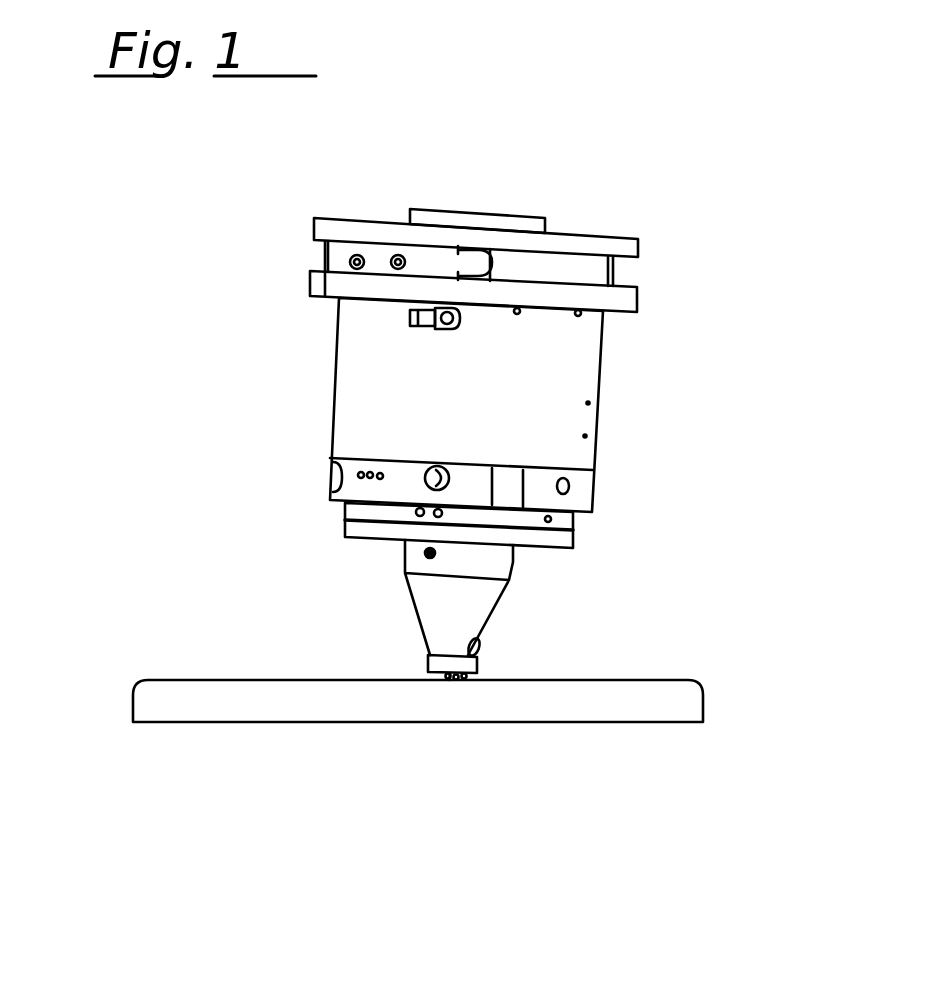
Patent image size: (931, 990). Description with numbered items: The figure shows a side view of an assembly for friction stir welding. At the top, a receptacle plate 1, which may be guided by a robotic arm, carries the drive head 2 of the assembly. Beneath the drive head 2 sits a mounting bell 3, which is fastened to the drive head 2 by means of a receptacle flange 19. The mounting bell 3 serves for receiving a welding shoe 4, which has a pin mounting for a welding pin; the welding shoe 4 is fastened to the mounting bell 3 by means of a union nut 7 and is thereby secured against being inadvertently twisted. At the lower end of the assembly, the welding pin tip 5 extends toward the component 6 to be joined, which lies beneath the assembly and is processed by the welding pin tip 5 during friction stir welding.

The receptacle plate 1 is at (520, 217).
The drive head 2 is at (540, 374).
The mounting bell 3 is at (487, 599).
The welding shoe 4 is at (463, 680).
The welding pin tip 5 is at (448, 680).
The component 6 is at (337, 699).
The union nut 7 is at (425, 658).
The receptacle flange 19 is at (358, 523).